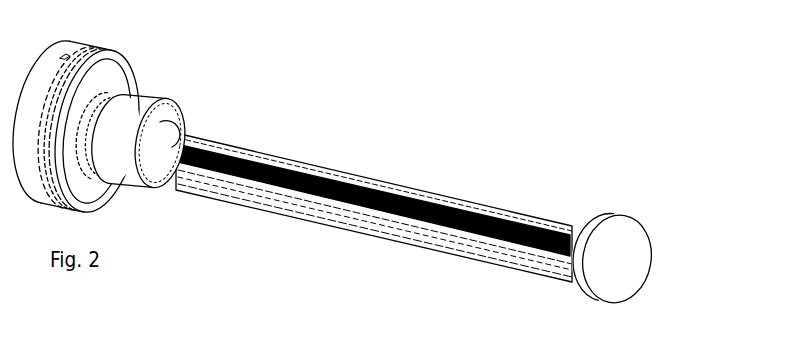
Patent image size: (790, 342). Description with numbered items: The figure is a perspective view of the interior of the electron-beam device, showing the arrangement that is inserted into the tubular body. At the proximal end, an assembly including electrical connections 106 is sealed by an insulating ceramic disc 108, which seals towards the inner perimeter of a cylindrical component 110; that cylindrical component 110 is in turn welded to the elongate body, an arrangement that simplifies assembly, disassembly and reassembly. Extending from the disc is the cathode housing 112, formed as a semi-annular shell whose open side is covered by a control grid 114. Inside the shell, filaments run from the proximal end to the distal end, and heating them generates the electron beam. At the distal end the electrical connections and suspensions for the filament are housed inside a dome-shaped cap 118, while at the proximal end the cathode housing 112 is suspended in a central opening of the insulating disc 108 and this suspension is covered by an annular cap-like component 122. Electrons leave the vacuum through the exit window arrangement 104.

The exit window arrangement 104 is at (426, 6).
The electrical connections 106 is at (120, 77).
The insulating ceramic disc 108 is at (80, 185).
The cylindrical component 110 is at (96, 58).
The cathode housing 112 is at (372, 214).
The control grid 114 is at (468, 214).
The dome-shaped cap 118 is at (631, 230).
The annular cap-like component 122 is at (328, 182).